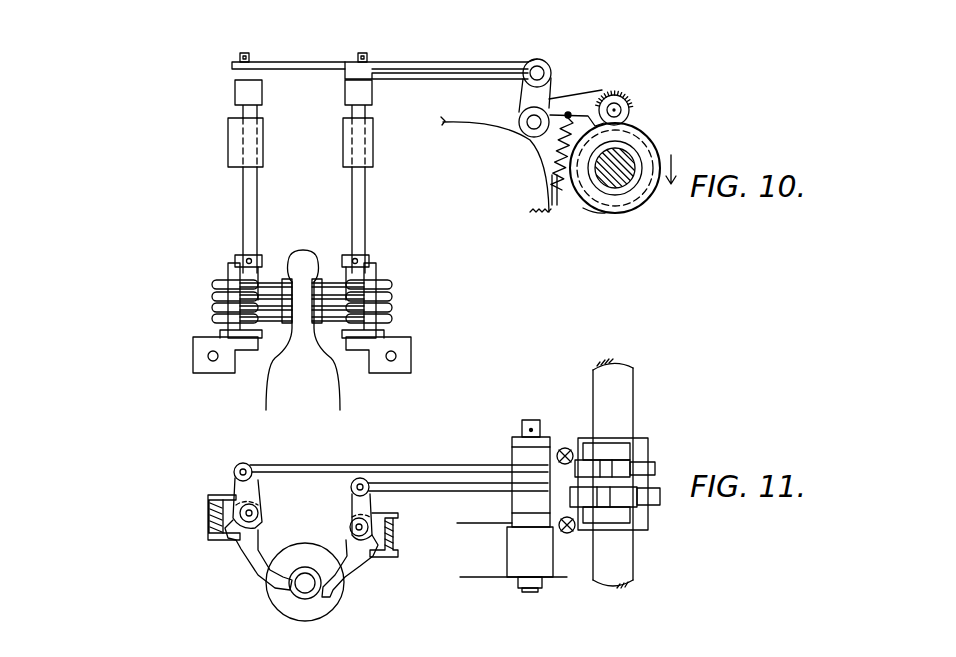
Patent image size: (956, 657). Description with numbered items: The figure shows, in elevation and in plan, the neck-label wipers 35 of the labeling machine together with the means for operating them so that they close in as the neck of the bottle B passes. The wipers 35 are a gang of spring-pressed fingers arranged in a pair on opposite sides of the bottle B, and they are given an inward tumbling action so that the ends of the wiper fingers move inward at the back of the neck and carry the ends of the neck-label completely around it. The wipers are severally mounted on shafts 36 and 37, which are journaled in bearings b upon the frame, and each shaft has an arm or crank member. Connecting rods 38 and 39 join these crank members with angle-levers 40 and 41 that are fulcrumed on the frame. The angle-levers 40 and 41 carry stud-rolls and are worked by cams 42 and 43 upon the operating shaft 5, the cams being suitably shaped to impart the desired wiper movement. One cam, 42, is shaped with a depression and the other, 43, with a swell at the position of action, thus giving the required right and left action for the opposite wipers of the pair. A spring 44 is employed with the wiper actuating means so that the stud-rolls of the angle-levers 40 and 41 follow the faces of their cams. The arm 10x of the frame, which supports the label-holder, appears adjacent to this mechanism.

In FIG. 10, the operating shaft 5 is at (630, 160).
In FIG. 11, the operating shaft 5 is at (613, 473).
In FIG. 10, the arm of the frame 10x is at (496, 164).
In FIG. 11, the arm of the frame 10x is at (512, 506).
In FIG. 10, the neck-label wipers 35 is at (240, 292).
In FIG. 11, the neck-label wipers 35 is at (262, 563).
In FIG. 10, the shaft 36 is at (356, 207).
In FIG. 11, the shaft 36 is at (352, 527).
In FIG. 10, the shaft 37 is at (250, 207).
In FIG. 11, the shaft 37 is at (252, 514).
In FIG. 10, the connecting rod 38 is at (428, 73).
In FIG. 11, the connecting rod 38 is at (410, 492).
In FIG. 10, the connecting rod 39 is at (307, 70).
In FIG. 11, the connecting rod 39 is at (398, 472).
In FIG. 10, the angle-lever 40 is at (545, 98).
In FIG. 11, the angle-lever 40 is at (600, 517).
In FIG. 10, the angle-lever 41 is at (597, 92).
In FIG. 11, the angle-lever 41 is at (597, 447).
In FIG. 10, the cam 42 is at (597, 207).
In FIG. 11, the cam 42 is at (650, 496).
In FIG. 10, the cam 43 is at (630, 130).
In FIG. 11, the cam 43 is at (650, 465).
In FIG. 10, the spring 44 is at (556, 153).
In FIG. 11, the spring 44 is at (562, 448).
In FIG. 10, the bearings b is at (208, 355).
In FIG. 10, the bottle B is at (303, 330).
In FIG. 11, the bottle B is at (307, 614).